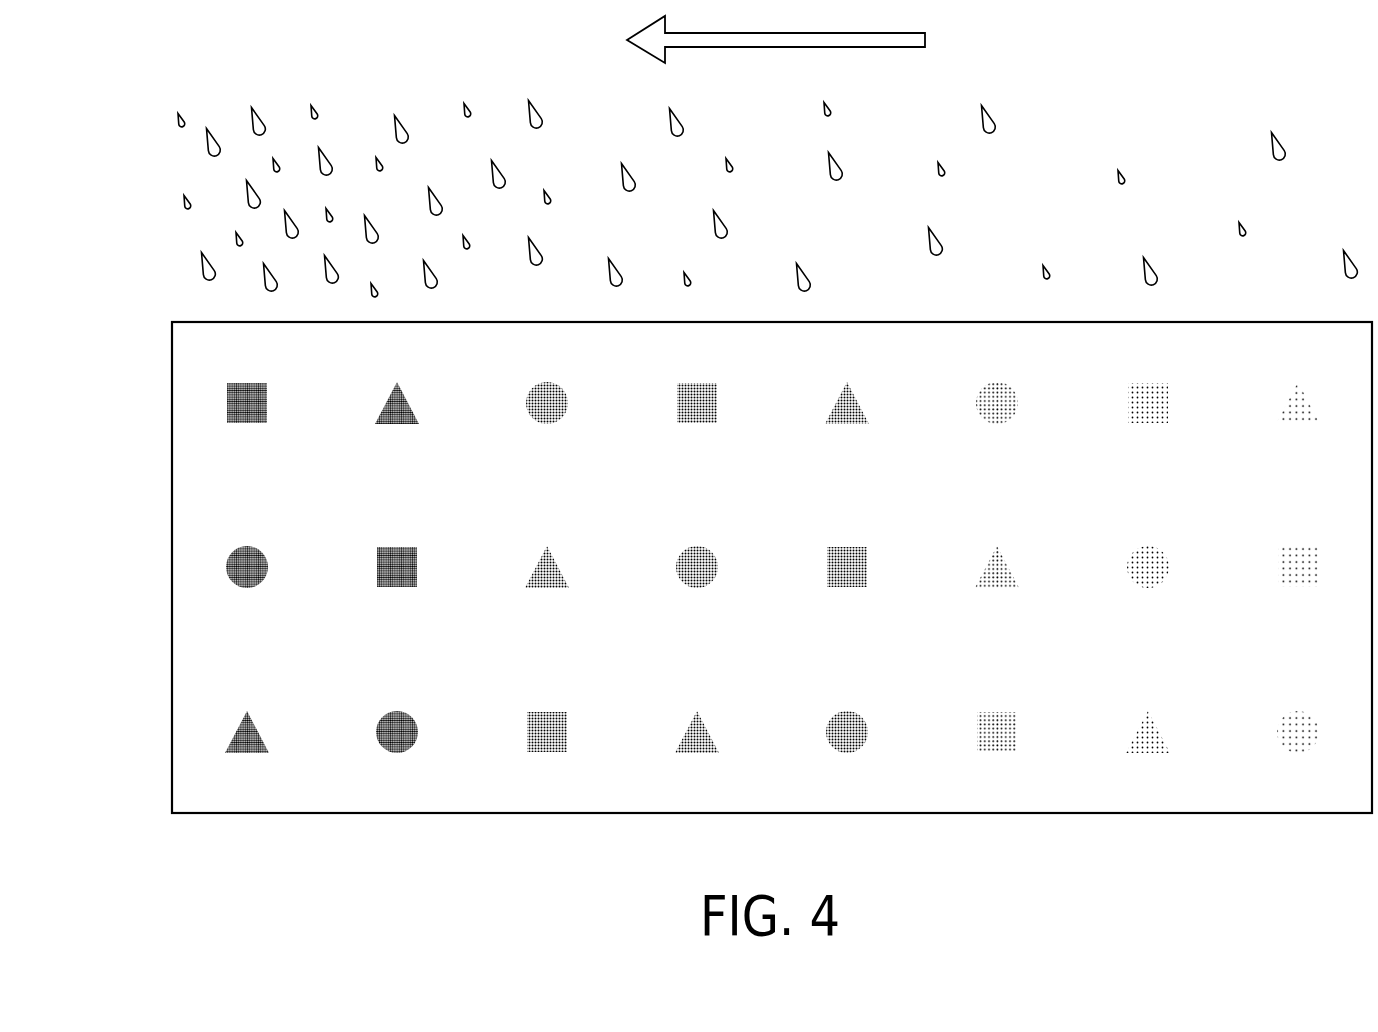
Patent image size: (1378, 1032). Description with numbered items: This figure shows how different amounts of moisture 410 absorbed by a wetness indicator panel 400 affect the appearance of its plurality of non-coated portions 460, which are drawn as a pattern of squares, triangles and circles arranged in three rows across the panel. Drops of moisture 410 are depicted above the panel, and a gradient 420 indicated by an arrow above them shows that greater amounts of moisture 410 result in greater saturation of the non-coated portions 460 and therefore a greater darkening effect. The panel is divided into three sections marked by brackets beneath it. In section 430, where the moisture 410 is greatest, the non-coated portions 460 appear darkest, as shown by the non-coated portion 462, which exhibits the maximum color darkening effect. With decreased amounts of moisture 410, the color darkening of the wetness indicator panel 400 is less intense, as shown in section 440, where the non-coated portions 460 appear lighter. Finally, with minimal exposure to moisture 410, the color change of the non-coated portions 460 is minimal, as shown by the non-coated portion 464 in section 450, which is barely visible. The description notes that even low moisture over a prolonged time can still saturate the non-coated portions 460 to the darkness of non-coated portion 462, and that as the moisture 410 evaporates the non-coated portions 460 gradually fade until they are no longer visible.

The wetness indicator panel 400 is at (208, 54).
The moisture 410 is at (1284, 142).
The gradient 420 is at (868, 48).
The section 430 is at (395, 631).
The section 440 is at (840, 631).
The section 450 is at (1175, 631).
The non-coated portion 460 is at (700, 578).
The non-coated portion 462 is at (236, 711).
The non-coated portion 464 is at (1300, 726).